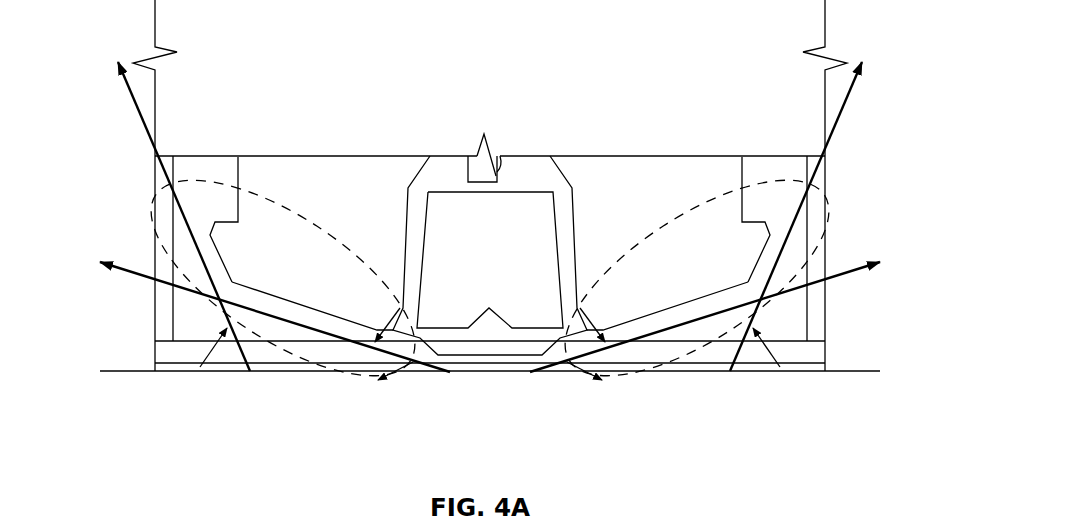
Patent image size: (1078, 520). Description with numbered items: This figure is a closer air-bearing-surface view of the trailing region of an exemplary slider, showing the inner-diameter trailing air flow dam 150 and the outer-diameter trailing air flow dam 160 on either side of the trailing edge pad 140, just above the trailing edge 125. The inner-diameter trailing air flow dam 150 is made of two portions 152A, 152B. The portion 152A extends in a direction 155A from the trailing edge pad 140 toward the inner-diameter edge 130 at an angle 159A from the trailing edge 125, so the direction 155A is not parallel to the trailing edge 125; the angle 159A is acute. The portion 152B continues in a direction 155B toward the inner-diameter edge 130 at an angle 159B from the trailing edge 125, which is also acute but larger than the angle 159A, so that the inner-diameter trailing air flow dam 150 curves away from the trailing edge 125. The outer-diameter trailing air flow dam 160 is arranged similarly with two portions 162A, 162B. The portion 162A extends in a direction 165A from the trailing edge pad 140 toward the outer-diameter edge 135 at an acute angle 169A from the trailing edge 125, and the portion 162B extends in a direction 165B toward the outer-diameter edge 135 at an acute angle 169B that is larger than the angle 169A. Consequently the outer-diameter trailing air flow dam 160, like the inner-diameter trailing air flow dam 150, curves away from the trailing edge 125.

The trailing edge 125 is at (512, 372).
The inner-diameter edge 130 is at (155, 206).
The outer-diameter edge 135 is at (828, 180).
The trailing edge pad 140 is at (478, 335).
The inner-diameter trailing air flow dam 150 is at (303, 215).
The outer-diameter trailing air flow dam 160 is at (677, 215).
The portion of the inner-diameter trailing air flow dam 152A is at (313, 306).
The portion of the inner-diameter trailing air flow dam 152B is at (218, 250).
The portion of the outer-diameter trailing air flow dam 162A is at (667, 306).
The portion of the outer-diameter trailing air flow dam 162B is at (762, 250).
The direction 155A is at (126, 272).
The direction 155B is at (141, 113).
The direction 165A is at (856, 272).
The direction 165B is at (842, 110).
The angle 159A is at (372, 388).
The angle 159B is at (210, 348).
The angle 169A is at (608, 388).
The angle 169B is at (770, 348).